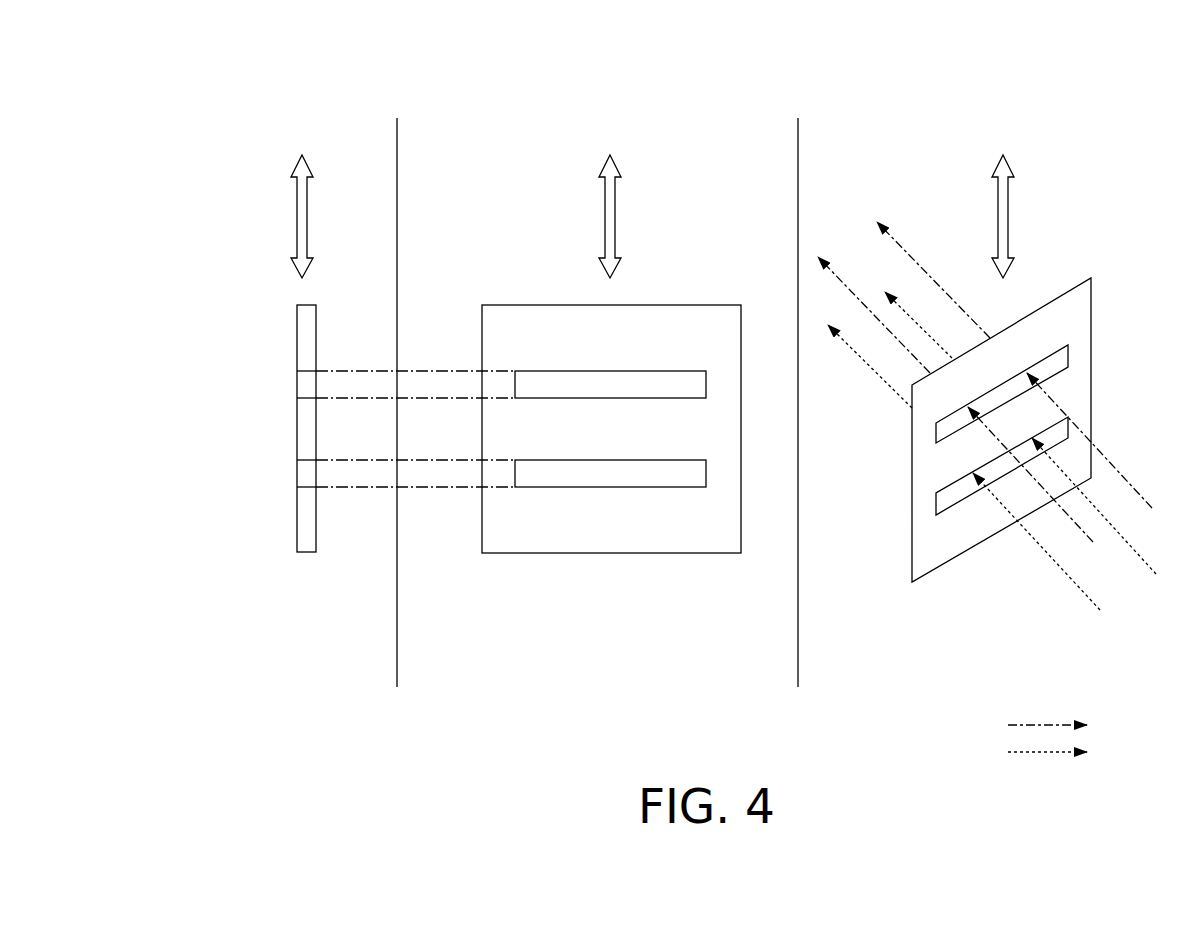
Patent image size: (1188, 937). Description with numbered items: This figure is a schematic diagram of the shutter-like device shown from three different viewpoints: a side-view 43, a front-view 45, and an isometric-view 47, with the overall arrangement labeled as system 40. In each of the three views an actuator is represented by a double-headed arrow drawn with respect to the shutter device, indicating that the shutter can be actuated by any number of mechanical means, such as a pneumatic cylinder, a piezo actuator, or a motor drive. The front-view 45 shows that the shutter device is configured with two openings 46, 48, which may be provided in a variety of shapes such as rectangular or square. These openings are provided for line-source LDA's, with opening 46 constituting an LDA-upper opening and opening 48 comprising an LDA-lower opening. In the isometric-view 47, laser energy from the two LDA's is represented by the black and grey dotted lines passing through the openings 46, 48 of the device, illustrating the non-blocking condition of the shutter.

The beam steering system 40 is at (882, 108).
The side-view 43 is at (258, 582).
The front-view 45 is at (477, 582).
The opening 46 is at (615, 380).
The isometric-view 47 is at (892, 583).
The opening 48 is at (605, 468).